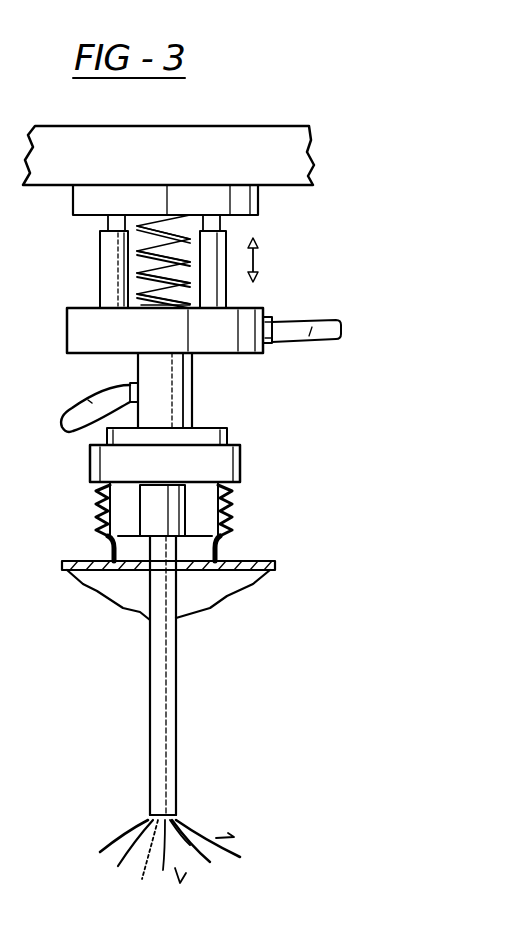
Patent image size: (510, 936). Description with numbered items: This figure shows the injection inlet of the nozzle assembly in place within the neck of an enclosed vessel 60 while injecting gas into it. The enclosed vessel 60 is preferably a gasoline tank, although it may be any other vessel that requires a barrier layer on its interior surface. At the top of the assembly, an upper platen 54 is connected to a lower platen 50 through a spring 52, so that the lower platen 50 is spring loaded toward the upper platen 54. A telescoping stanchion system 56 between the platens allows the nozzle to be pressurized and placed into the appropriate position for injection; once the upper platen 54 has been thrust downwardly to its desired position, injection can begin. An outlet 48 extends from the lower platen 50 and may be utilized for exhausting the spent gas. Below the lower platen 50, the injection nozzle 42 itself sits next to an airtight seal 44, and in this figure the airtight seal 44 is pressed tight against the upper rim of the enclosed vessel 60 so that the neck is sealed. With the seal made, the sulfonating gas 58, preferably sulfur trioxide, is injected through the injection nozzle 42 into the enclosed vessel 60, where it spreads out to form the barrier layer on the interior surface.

The upper platen 54 is at (269, 163).
The telescoping stanchion system 56 is at (217, 293).
The spring 52 is at (175, 278).
The lower platen 50 is at (217, 325).
The outlet 48 is at (318, 316).
The injection nozzle 42 is at (84, 397).
The airtight seal 44 is at (213, 470).
The enclosed vessel 60 is at (229, 530).
The sulfonating gas 58 is at (197, 860).